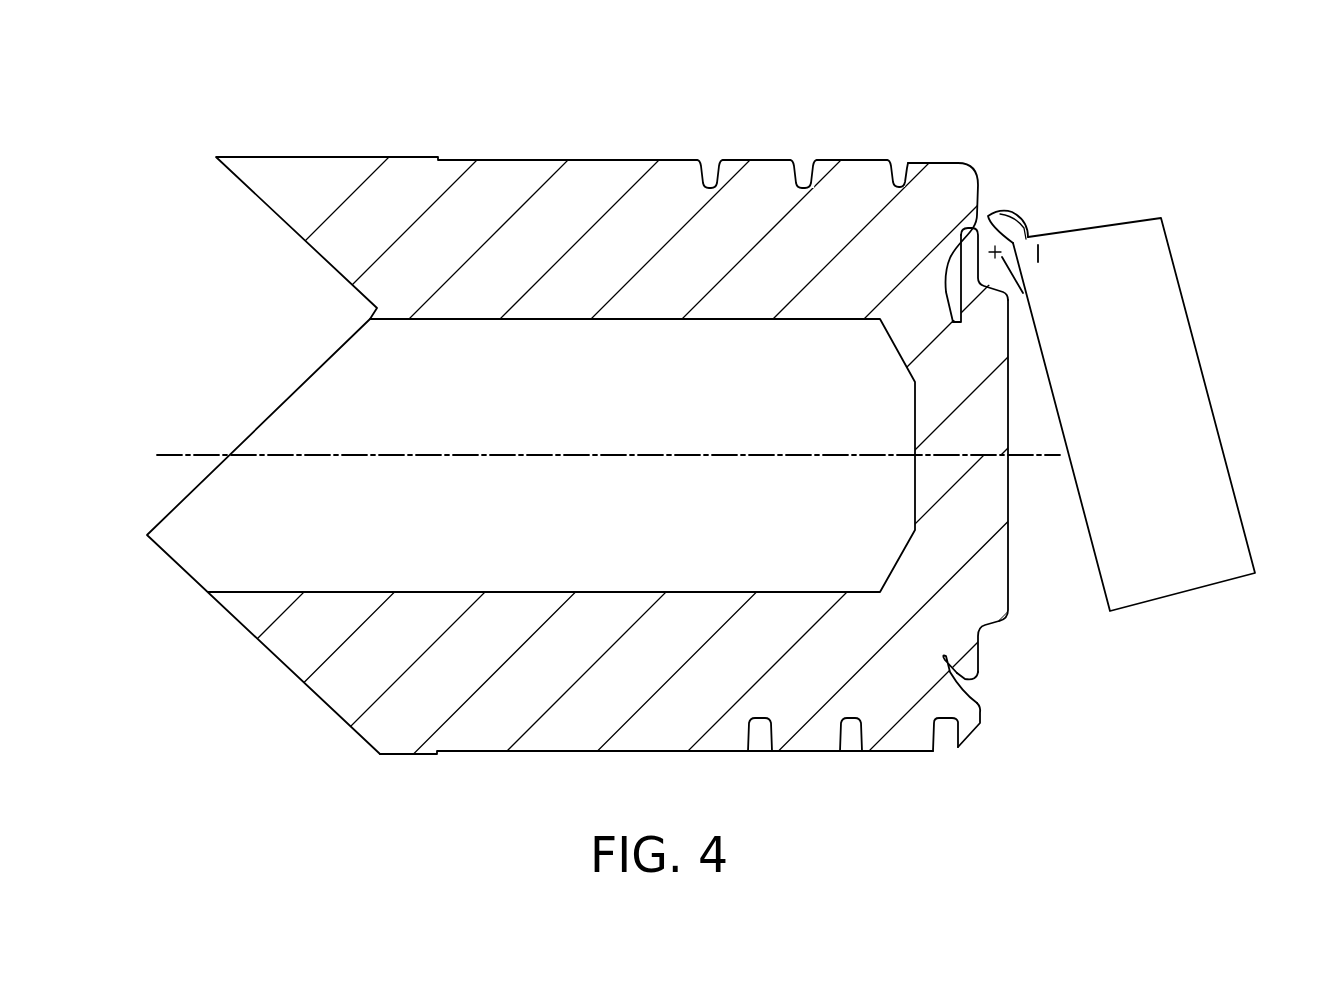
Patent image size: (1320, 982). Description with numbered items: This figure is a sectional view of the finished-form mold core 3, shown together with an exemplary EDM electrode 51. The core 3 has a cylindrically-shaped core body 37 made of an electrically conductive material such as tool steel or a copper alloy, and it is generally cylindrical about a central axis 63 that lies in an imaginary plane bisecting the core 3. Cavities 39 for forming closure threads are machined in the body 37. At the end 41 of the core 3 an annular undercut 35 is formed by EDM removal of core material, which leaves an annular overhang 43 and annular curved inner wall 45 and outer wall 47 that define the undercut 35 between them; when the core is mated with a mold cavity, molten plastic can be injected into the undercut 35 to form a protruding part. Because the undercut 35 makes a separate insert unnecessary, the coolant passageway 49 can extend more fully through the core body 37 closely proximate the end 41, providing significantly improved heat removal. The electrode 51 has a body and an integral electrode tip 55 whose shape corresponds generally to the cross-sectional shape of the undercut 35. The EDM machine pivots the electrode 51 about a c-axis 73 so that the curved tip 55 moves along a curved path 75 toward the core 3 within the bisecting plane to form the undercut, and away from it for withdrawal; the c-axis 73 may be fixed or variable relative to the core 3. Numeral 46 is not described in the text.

The core 3 is at (454, 126).
The cavities 39 is at (893, 170).
The outer wall 47 is at (950, 228).
The electrode tip 55 is at (1008, 213).
The curved path 75 is at (1038, 255).
The c-axis 73 is at (1016, 270).
The electrode 51 is at (1210, 390).
The tongue 46 is at (945, 262).
The inner wall 45 is at (953, 298).
The central axis 63 is at (583, 455).
The coolant passageway 49 is at (285, 560).
The core body 37 is at (555, 752).
The annular overhang 43 is at (968, 663).
The annular undercut 35 is at (975, 688).
The end 41 is at (973, 728).